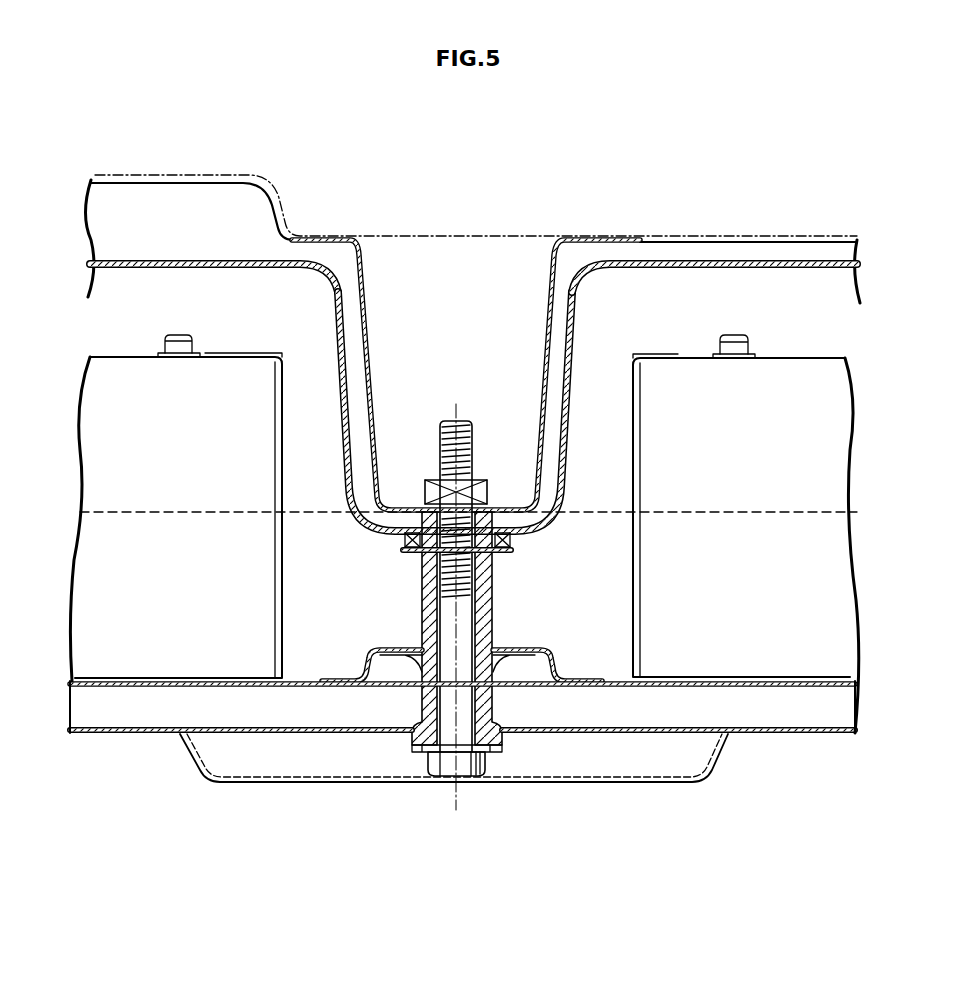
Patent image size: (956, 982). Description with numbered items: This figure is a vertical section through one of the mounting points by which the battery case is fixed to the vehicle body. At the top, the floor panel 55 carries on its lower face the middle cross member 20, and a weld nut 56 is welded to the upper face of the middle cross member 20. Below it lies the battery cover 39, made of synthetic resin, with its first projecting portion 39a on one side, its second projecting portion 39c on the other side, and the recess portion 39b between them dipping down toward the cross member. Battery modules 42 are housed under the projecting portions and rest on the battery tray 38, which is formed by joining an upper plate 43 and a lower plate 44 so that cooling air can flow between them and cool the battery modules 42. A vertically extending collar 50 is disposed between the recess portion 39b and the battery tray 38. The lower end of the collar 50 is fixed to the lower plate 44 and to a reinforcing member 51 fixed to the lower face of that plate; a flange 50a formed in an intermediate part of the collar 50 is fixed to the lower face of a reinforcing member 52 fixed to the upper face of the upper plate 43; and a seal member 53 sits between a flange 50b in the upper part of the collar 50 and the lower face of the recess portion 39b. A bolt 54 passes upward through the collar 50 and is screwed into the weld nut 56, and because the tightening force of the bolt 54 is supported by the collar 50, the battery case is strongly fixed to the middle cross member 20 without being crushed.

The middle cross member 20 is at (362, 355).
The battery tray 38 is at (792, 741).
The battery cover 39 is at (697, 254).
The first projecting portion 39a is at (186, 261).
The recess portion 39b is at (346, 428).
The second projecting portion 39c is at (764, 263).
The battery module 42 is at (147, 499).
The upper plate 43 is at (305, 681).
The lower plate 44 is at (122, 735).
The collar 50 is at (416, 601).
The flange 50a is at (514, 658).
The flange 50b is at (509, 554).
The reinforcing member 51 is at (566, 783).
The reinforcing member 52 is at (552, 668).
The seal member 53 is at (512, 541).
The bolt 54 is at (452, 777).
The floor panel 55 is at (418, 237).
The weld nut 56 is at (485, 496).